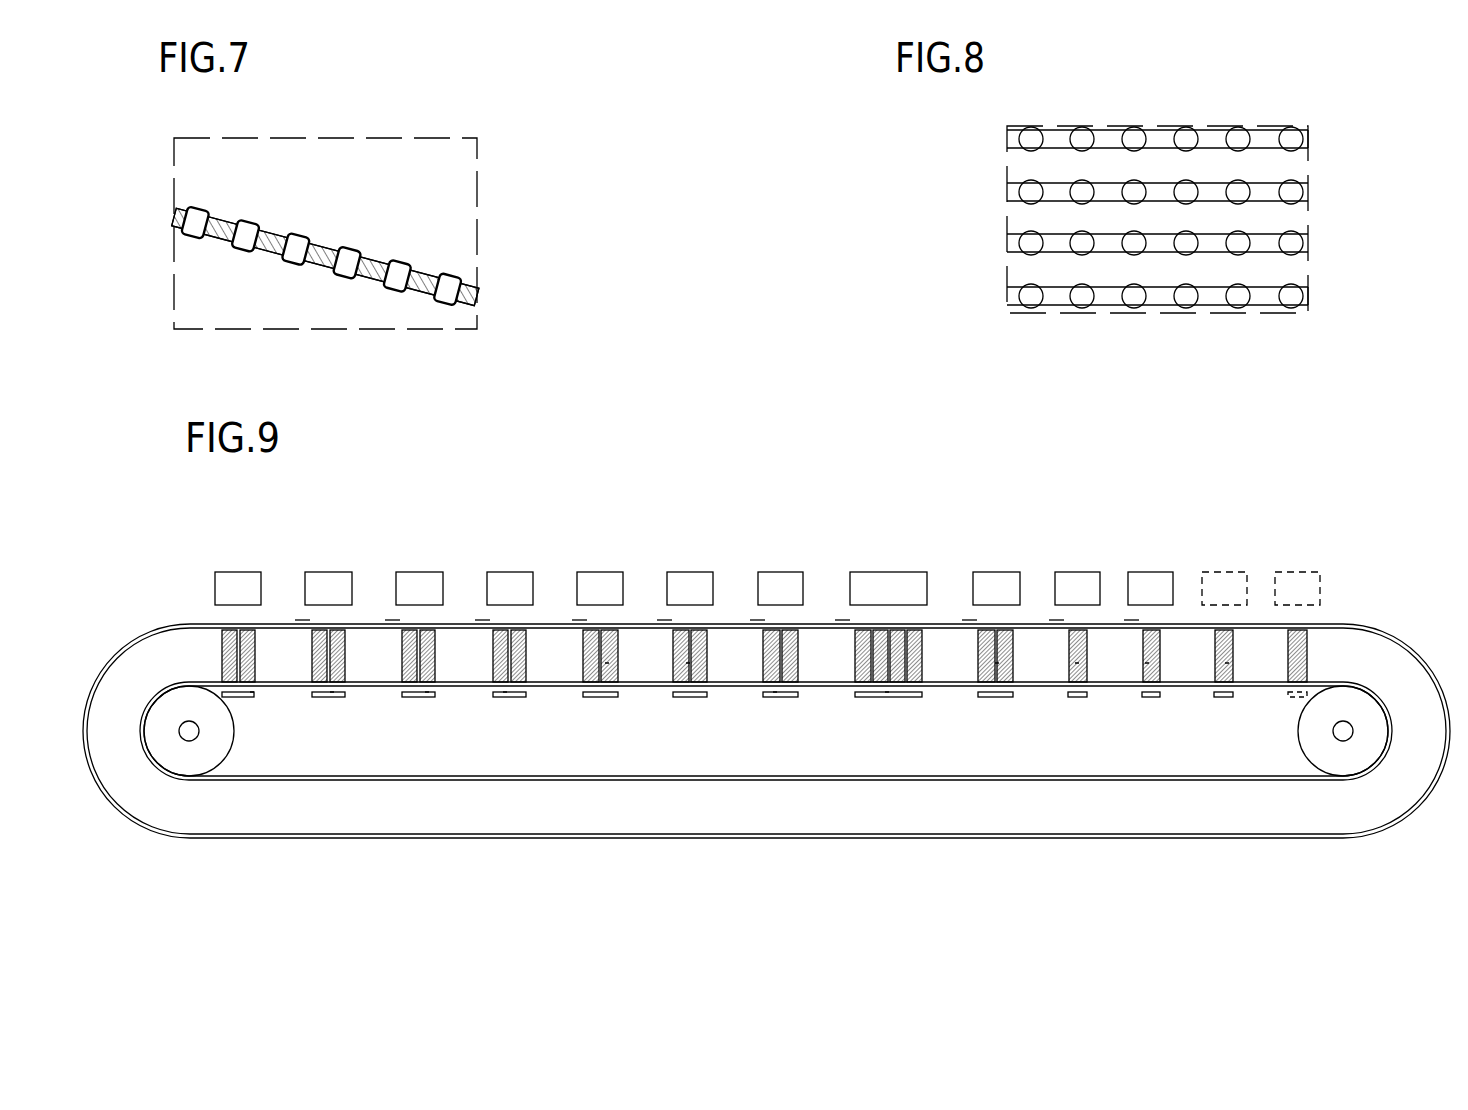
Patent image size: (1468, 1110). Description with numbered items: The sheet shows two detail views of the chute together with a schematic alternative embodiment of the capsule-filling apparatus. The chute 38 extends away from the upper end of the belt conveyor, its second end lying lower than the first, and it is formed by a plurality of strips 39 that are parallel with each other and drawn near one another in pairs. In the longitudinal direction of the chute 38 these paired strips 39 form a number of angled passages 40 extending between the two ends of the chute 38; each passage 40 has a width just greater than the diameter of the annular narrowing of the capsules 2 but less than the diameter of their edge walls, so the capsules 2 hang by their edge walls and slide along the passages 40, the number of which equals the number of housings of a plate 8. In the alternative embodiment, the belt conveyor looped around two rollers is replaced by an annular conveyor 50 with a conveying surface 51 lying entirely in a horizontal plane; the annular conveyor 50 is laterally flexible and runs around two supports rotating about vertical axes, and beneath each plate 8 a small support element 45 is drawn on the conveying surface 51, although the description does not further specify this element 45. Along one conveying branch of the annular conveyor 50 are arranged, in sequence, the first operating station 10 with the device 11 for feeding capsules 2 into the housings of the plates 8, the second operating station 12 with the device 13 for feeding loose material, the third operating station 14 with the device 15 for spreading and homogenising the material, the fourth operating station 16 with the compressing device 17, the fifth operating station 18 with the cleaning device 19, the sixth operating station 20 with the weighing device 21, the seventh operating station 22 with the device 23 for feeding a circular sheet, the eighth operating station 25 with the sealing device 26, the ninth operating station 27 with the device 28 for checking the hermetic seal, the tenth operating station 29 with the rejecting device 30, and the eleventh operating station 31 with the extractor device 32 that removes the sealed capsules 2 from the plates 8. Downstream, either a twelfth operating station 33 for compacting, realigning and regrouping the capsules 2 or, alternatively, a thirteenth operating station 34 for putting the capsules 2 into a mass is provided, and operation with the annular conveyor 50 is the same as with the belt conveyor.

In FIG. 7, the capsule 2 is at (347, 262).
In FIG. 8, the capsule 2 is at (1134, 136).
In FIG. 9, the plate 8 is at (607, 663).
In FIG. 9, the first operating station 10 is at (766, 713).
In FIG. 9, the device for feeding capsules 11 is at (226, 601).
In FIG. 9, the second operating station 12 is at (303, 615).
In FIG. 9, the device for feeding loose material 13 is at (316, 601).
In FIG. 9, the third operating station 14 is at (393, 615).
In FIG. 9, the device for spreading and homogenisation 15 is at (407, 601).
In FIG. 9, the fourth operating station 16 is at (483, 615).
In FIG. 9, the device for compressing 17 is at (498, 601).
In FIG. 9, the fifth operating station 18 is at (580, 615).
In FIG. 9, the cleaning device 19 is at (588, 601).
In FIG. 9, the sixth operating station 20 is at (665, 615).
In FIG. 9, the weighing device 21 is at (678, 601).
In FIG. 9, the seventh operating station 22 is at (758, 615).
In FIG. 9, the device for feeding a circular sheet 23 is at (768, 601).
In FIG. 9, the eighth operating station 25 is at (843, 615).
In FIG. 9, the sealing device 26 is at (876, 601).
In FIG. 9, the ninth operating station 27 is at (970, 615).
In FIG. 9, the device for checking the hermetic seal 28 is at (984, 601).
In FIG. 9, the tenth operating station 29 is at (1057, 615).
In FIG. 9, the device for rejecting faulty capsules 30 is at (1065, 601).
In FIG. 9, the eleventh operating station 31 is at (1132, 615).
In FIG. 9, the extractor device 32 is at (1138, 601).
In FIG. 9, the twelfth operating station 33 is at (1207, 615).
In FIG. 9, the thirteenth operating station 34 is at (1280, 615).
In FIG. 7, the chute 38 is at (427, 187).
In FIG. 8, the chute 38 is at (1316, 112).
In FIG. 7, the strip 39 is at (423, 277).
In FIG. 8, the strip 39 is at (1290, 167).
In FIG. 7, the angled passage 40 is at (475, 297).
In FIG. 8, the angled passage 40 is at (1314, 137).
In FIG. 9, the holder 45 is at (252, 697).
In FIG. 9, the annular conveyor 50 is at (1357, 808).
In FIG. 9, the conveying surface 51 is at (1267, 797).